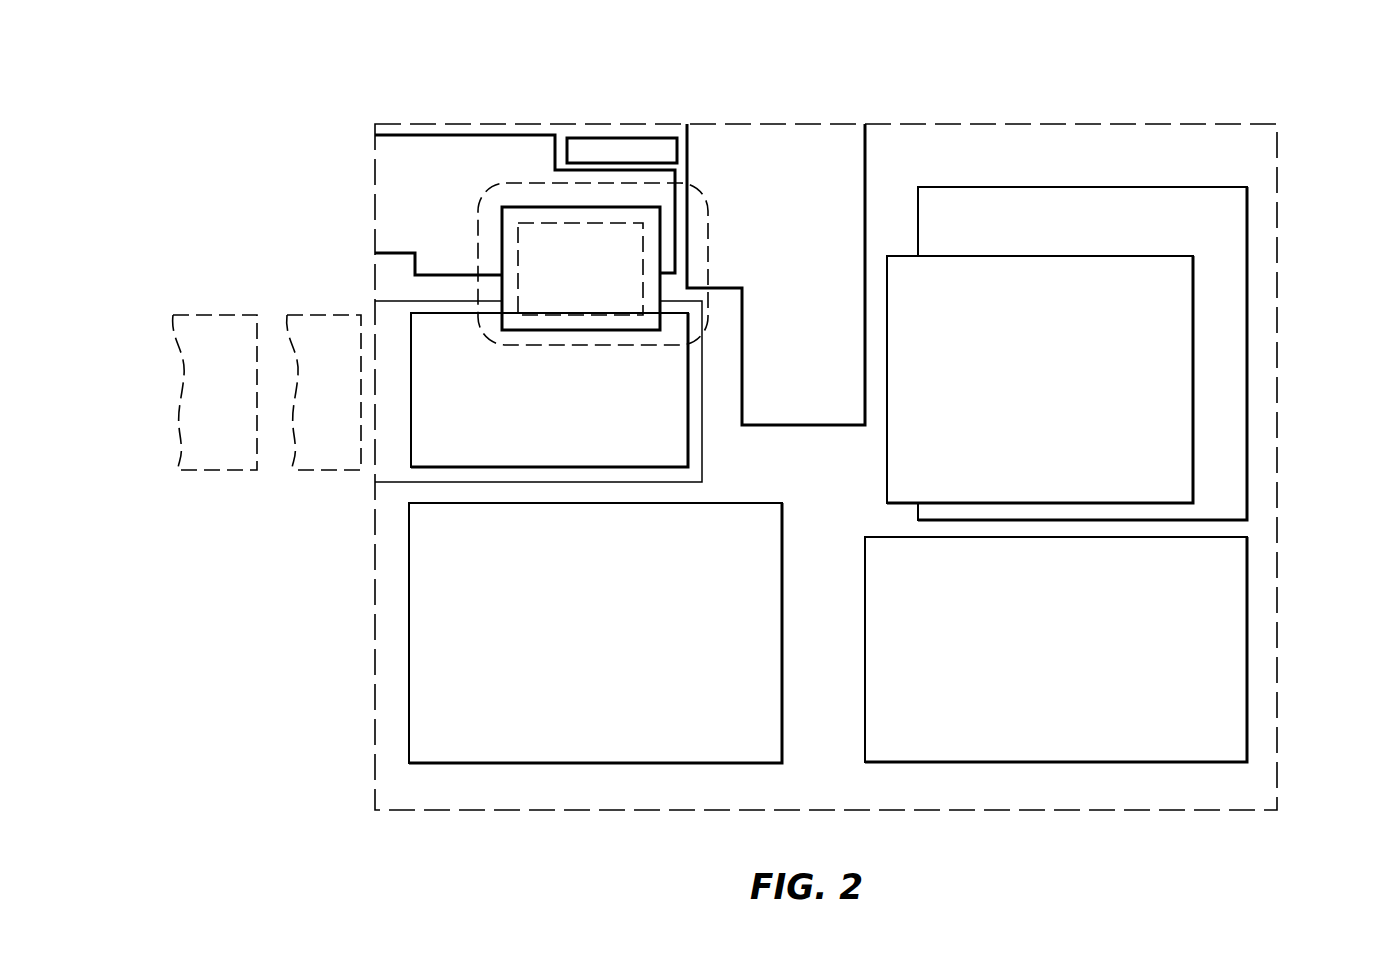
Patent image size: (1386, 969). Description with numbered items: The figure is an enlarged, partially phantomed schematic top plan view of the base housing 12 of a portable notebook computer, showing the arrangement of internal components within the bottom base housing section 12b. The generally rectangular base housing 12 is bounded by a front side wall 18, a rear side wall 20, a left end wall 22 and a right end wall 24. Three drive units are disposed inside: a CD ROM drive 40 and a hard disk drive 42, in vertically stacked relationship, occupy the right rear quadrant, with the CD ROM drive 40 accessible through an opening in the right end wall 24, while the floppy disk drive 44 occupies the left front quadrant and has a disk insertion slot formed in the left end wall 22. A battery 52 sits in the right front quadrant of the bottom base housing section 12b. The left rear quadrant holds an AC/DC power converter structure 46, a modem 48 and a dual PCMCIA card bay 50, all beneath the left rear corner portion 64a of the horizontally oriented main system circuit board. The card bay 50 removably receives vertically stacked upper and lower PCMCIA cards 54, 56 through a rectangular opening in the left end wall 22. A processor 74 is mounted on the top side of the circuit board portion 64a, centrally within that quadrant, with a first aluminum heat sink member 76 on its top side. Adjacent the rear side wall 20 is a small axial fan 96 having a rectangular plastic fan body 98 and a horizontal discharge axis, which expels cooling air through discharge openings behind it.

The base housing 12 is at (1312, 423).
The bottom base housing section 12b is at (1292, 155).
The front side wall 18 is at (1137, 811).
The rear side wall 20 is at (1088, 122).
The left end wall 22 is at (376, 650).
The right end wall 24 is at (1281, 560).
The CD ROM drive 40 is at (1248, 252).
The hard disk drive 42 is at (1195, 347).
The floppy disk drive 44 is at (408, 722).
The AC/DC power converter structure 46 is at (866, 152).
The modem 48 is at (418, 134).
The dual PCMCIA card bay 50 is at (441, 468).
The battery 52 is at (1248, 662).
The upper PCMCIA card 54 is at (337, 313).
The lower PCMCIA card 56 is at (215, 313).
The left rear corner portion of the main system circuit board 64a is at (518, 182).
The processor 74 is at (501, 246).
The first aluminum heat sink member 76 is at (501, 318).
The axial fan 96 is at (645, 113).
The fan body 98 is at (670, 148).